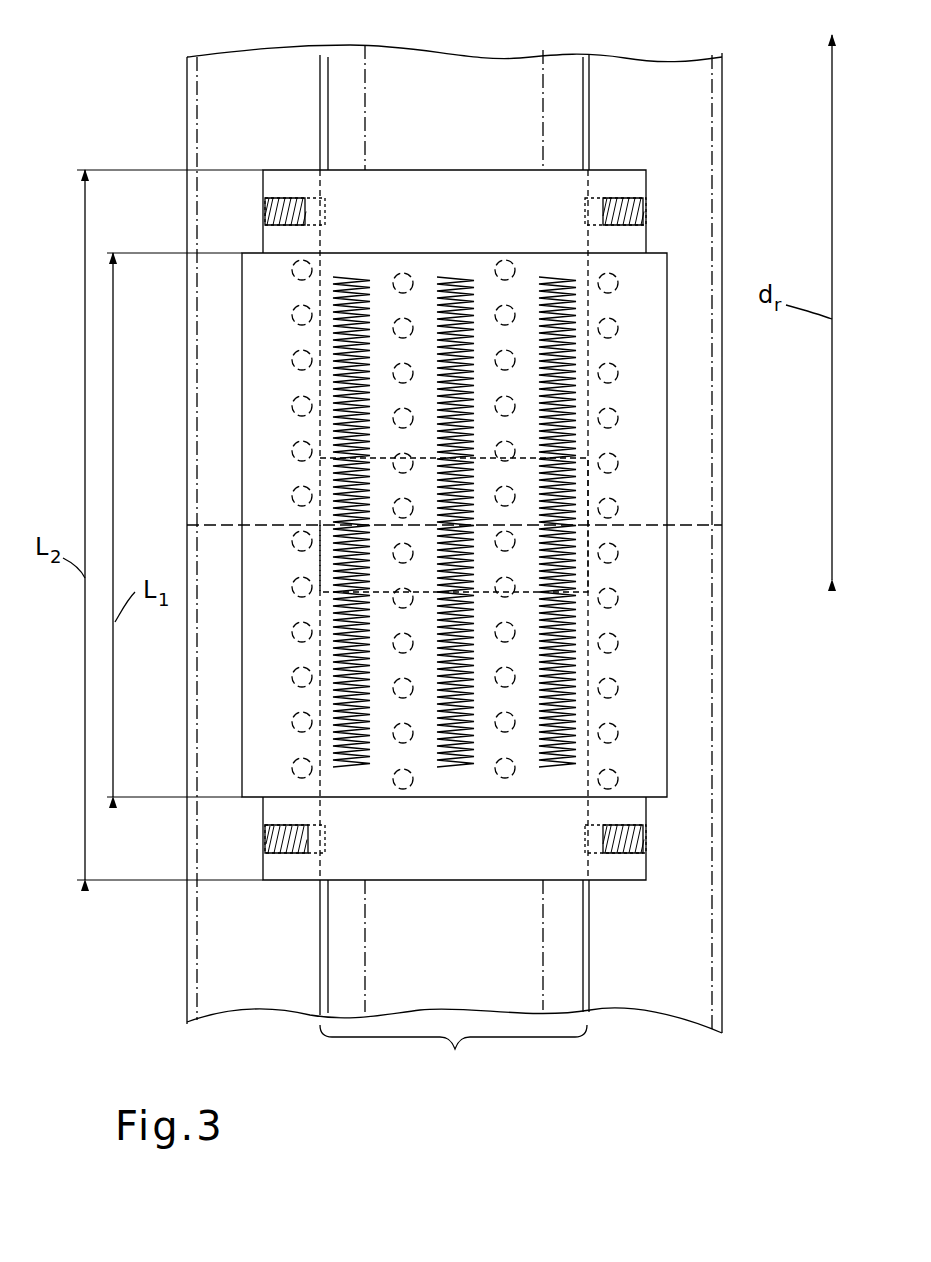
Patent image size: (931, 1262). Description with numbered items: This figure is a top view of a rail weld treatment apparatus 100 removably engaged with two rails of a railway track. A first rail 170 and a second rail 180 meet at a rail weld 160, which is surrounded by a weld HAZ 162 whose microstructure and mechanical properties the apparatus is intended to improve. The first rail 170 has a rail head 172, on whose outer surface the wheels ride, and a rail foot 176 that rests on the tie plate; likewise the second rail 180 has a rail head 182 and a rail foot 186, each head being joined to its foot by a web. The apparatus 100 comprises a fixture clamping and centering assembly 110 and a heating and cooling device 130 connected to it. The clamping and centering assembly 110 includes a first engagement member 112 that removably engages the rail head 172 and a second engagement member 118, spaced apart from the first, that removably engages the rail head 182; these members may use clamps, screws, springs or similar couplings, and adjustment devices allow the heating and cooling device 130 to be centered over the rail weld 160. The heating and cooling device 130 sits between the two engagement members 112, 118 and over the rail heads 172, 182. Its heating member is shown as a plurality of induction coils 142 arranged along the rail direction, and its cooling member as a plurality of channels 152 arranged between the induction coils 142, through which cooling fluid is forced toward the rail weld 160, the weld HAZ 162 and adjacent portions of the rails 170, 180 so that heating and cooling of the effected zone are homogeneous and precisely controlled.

The rail weld treatment apparatus 100 is at (225, 100).
The fixture clamping and centering assembly 110 is at (248, 852).
The first engagement member 112 is at (675, 254).
The second engagement member 118 is at (675, 881).
The heating and cooling device 130 is at (652, 658).
The induction coil 142 is at (550, 258).
The channel 152 is at (608, 562).
The rail weld 160 is at (388, 521).
The weld HAZ 162 is at (527, 500).
The first rail 170 is at (692, 266).
The rail head 172 is at (483, 62).
The rail foot 176 is at (668, 75).
The second rail 180 is at (703, 701).
The rail head 182 is at (455, 1049).
The rail foot 186 is at (633, 992).